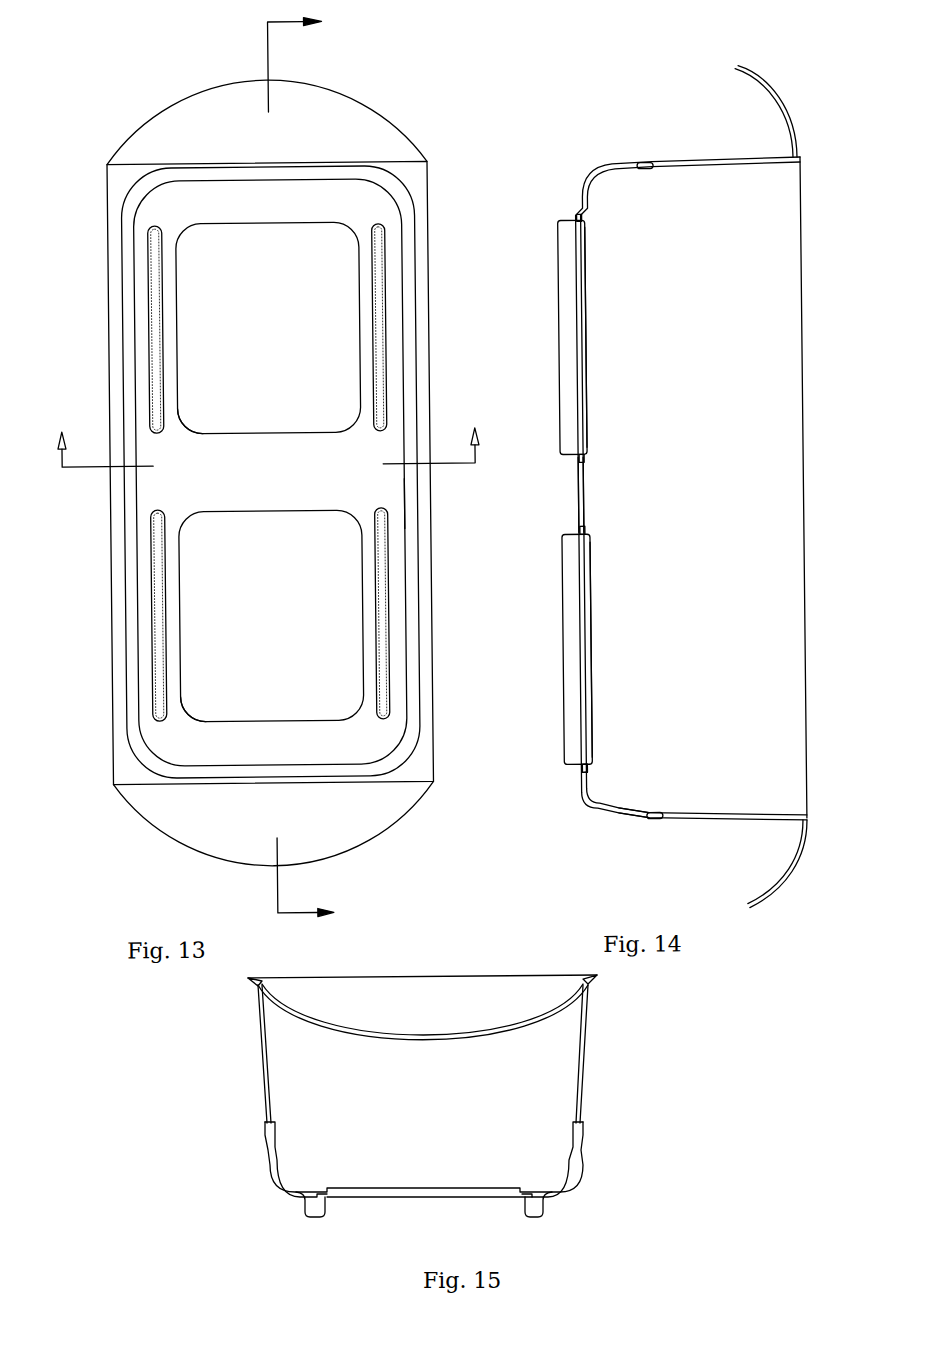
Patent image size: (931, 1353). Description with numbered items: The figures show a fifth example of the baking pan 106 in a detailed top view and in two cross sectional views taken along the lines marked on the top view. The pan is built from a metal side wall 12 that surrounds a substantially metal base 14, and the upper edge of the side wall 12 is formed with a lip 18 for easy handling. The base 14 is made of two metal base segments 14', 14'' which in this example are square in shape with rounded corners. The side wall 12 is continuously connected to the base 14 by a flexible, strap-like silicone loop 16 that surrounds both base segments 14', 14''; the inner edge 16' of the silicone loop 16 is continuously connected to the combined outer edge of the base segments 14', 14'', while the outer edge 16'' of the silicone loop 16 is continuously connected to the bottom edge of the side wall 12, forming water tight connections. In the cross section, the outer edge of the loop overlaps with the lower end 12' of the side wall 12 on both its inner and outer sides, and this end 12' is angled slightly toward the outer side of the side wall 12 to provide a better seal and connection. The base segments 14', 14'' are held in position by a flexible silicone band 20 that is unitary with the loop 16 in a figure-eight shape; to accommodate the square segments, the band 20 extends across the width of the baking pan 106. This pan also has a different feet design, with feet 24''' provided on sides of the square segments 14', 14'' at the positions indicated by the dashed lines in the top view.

In FIG. 13, the baking pan 106 is at (430, 95).
In FIG. 14, the baking pan 106 is at (619, 861).
In FIG. 15, the baking pan 106 is at (630, 1018).
In FIG. 13, the side wall 12 is at (301, 473).
In FIG. 14, the side wall 12 is at (691, 519).
In FIG. 14, the lower end of the side wall 12' is at (658, 834).
In FIG. 14, the base 14 is at (568, 446).
In FIG. 13, the base segment 14' is at (268, 328).
In FIG. 14, the base segment 14' is at (609, 337).
In FIG. 15, the base segment 14' is at (424, 1159).
In FIG. 13, the base segment 14'' is at (271, 616).
In FIG. 14, the base segment 14'' is at (618, 650).
In FIG. 13, the silicone loop 16 is at (270, 471).
In FIG. 13, the inner edge of the silicone loop 16' is at (204, 543).
In FIG. 14, the inner edge of the silicone loop 16' is at (620, 742).
In FIG. 13, the outer edge of the silicone loop 16'' is at (379, 503).
In FIG. 14, the outer edge of the silicone loop 16'' is at (674, 781).
In FIG. 13, the lip 18 is at (161, 837).
In FIG. 14, the lip 18 is at (785, 873).
In FIG. 13, the silicone band 20 is at (266, 442).
In FIG. 14, the silicone band 20 is at (581, 488).
In FIG. 13, the feet 24''' is at (268, 473).
In FIG. 14, the feet 24''' is at (543, 478).
In FIG. 15, the feet 24''' is at (438, 1224).